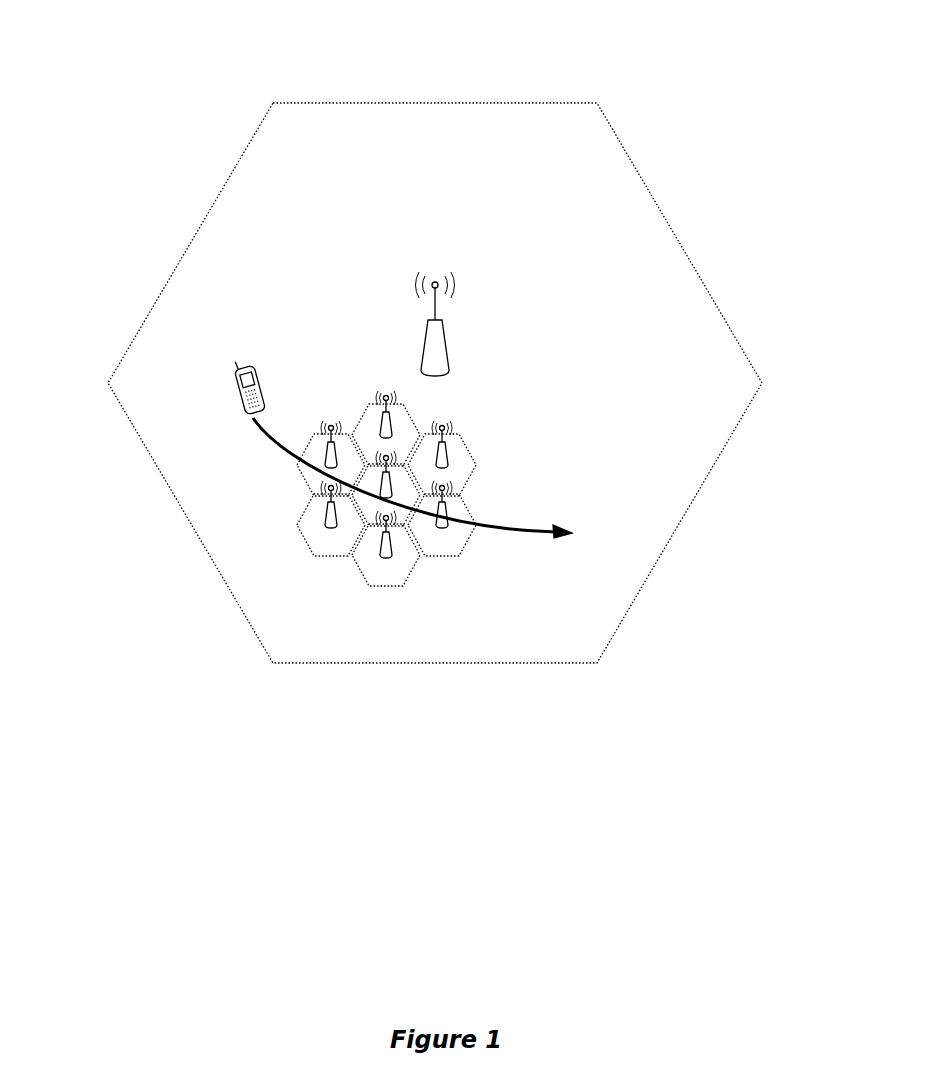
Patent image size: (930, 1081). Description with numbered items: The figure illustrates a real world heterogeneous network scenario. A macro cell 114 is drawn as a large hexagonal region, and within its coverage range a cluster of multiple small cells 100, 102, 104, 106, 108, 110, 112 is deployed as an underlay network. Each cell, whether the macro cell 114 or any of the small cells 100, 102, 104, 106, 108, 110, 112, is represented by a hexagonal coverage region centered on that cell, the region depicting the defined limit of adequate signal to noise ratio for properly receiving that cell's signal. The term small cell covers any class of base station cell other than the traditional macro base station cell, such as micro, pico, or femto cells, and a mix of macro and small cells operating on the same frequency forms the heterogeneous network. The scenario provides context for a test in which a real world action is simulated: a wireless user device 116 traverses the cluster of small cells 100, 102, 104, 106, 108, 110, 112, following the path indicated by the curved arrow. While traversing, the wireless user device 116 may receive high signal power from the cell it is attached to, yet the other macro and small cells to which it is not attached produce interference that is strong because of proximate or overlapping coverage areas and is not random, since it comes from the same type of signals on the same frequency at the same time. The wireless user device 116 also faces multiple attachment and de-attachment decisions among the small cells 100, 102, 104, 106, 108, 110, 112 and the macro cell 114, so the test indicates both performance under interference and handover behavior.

The small cell 100 is at (392, 490).
The small cell 102 is at (330, 440).
The small cell 104 is at (320, 531).
The small cell 106 is at (378, 558).
The small cell 108 is at (448, 532).
The small cell 110 is at (446, 454).
The small cell 112 is at (393, 418).
The macro cell 114 is at (423, 337).
The wireless user device 116 is at (238, 385).